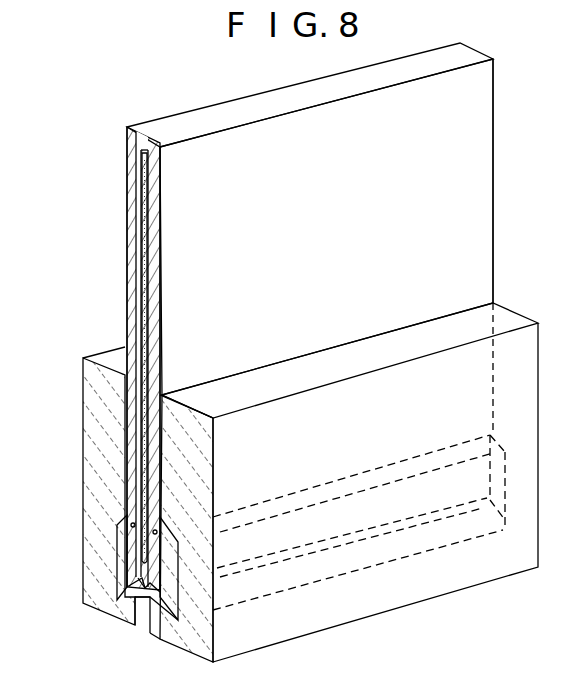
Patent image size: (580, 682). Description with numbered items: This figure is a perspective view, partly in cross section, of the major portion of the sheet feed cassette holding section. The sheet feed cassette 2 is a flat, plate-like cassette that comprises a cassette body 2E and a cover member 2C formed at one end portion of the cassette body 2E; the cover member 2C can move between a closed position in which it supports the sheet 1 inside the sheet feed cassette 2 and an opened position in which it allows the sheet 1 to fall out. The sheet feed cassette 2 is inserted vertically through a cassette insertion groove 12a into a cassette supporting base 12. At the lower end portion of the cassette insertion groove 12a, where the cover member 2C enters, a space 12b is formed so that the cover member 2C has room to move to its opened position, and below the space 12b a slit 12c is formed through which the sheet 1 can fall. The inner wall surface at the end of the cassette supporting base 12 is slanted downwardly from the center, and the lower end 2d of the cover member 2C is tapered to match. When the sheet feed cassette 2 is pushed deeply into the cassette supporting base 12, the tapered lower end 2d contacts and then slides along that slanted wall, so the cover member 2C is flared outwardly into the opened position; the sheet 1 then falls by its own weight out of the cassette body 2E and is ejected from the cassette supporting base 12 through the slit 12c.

The sheet 1 is at (143, 200).
The sheet feed cassette 2 is at (182, 173).
The cassette body 2E is at (268, 140).
The cover member 2C is at (127, 570).
The lower end of the cover member 2d is at (133, 597).
The cassette supporting base 12 is at (103, 415).
The cassette insertion groove 12a is at (162, 395).
The space 12b is at (117, 545).
The slit 12c is at (142, 617).